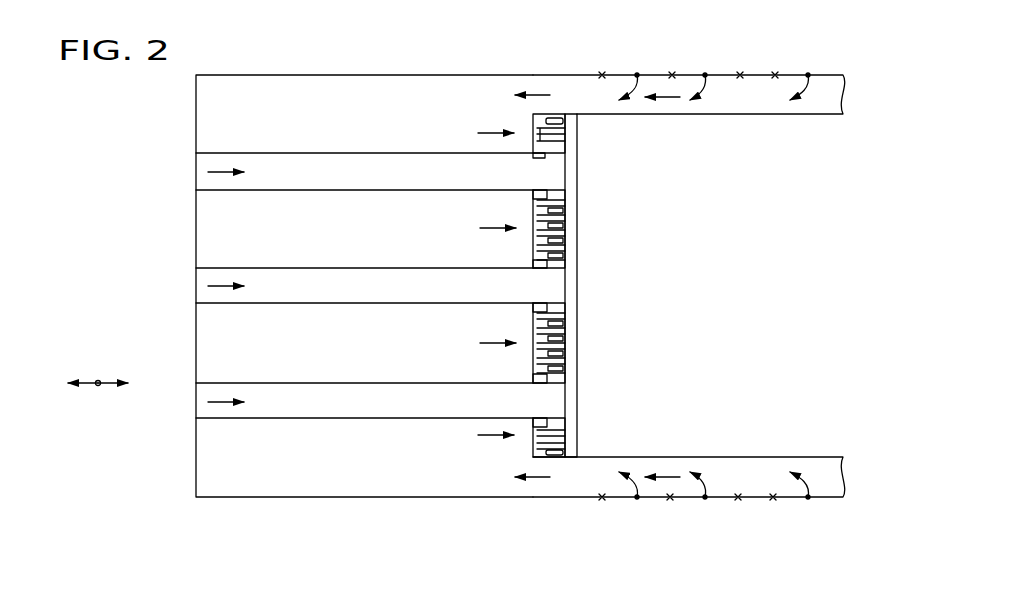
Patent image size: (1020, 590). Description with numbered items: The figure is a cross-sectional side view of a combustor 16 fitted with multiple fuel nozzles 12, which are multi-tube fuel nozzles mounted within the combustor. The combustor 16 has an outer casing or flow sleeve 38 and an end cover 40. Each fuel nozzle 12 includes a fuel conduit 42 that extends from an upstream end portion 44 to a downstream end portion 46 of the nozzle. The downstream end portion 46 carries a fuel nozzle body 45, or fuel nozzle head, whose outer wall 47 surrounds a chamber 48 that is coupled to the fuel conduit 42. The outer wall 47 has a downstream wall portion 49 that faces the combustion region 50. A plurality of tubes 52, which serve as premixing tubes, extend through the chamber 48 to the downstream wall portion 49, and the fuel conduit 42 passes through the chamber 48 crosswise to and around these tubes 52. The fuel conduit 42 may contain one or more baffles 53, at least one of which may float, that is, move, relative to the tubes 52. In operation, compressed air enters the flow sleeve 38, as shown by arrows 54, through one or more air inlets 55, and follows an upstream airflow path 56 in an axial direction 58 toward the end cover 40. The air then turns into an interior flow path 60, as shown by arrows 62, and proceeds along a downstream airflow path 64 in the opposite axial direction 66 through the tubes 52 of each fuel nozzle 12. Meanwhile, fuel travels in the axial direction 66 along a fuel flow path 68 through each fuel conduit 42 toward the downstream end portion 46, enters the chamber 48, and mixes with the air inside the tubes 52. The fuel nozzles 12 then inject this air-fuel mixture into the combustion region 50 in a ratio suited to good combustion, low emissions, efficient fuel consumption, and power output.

The fuel nozzle 12 is at (440, 150).
The combustor 16 is at (330, 37).
The flow sleeve 38 is at (476, 75).
The end cover 40 is at (197, 230).
The fuel conduit 42 is at (276, 152).
The upstream end portion 44 is at (233, 150).
The fuel nozzle body 45 is at (584, 206).
The downstream end portion 46 is at (583, 147).
The outer wall 47 is at (577, 170).
The chamber 48 is at (577, 182).
The downstream wall portion 49 is at (577, 158).
The combustion region 50 is at (727, 295).
The tubes 52 is at (537, 142).
The baffle 53 is at (577, 193).
The arrows 54 is at (808, 75).
The air inlets 55 is at (740, 75).
The upstream airflow path 56 is at (538, 93).
The axial direction 58 is at (81, 387).
The interior flow path 60 is at (330, 238).
The arrows 62 is at (377, 144).
The downstream airflow path 64 is at (490, 226).
The axial direction 66 is at (117, 382).
The fuel flow path 68 is at (220, 289).